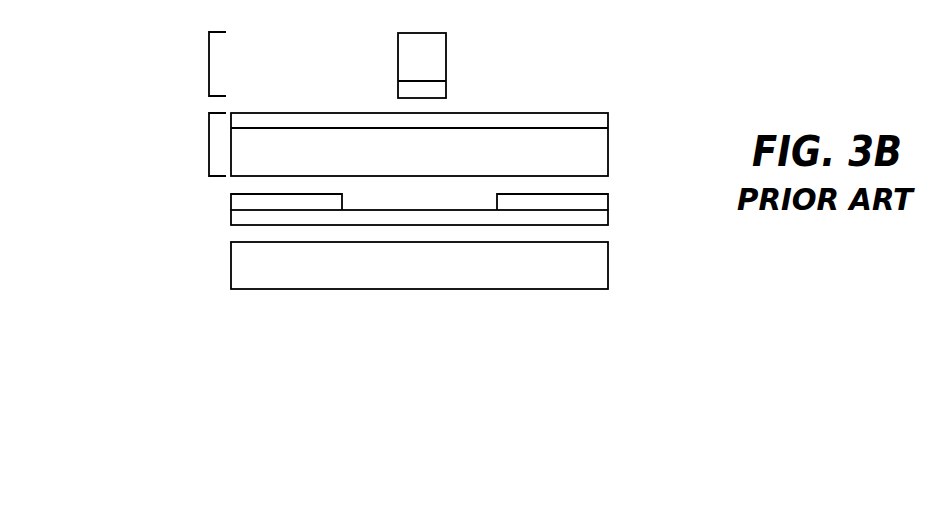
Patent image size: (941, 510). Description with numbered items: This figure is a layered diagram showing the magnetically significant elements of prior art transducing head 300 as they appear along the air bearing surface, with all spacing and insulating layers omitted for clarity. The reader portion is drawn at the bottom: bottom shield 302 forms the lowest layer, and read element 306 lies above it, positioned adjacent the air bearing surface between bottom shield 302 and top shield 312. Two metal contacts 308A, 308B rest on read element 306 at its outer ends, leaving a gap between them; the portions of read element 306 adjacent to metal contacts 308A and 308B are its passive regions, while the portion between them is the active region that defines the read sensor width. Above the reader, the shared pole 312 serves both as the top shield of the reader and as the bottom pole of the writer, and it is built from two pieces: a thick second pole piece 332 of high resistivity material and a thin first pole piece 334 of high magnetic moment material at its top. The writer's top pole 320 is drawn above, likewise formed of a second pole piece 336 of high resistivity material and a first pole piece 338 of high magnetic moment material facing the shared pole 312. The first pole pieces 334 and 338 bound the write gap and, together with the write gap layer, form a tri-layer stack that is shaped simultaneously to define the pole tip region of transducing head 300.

The transducing head 300 is at (548, 82).
The bottom shield 302 is at (437, 280).
The read element 306 is at (255, 222).
The metal contact 308A is at (255, 204).
The metal contact 308B is at (588, 207).
The top shield / shared pole 312 is at (208, 135).
The top pole 320 is at (208, 70).
The second pole piece 332 is at (437, 168).
The first pole piece 334 is at (583, 126).
The second pole piece 336 is at (440, 70).
The first pole piece 338 is at (430, 93).